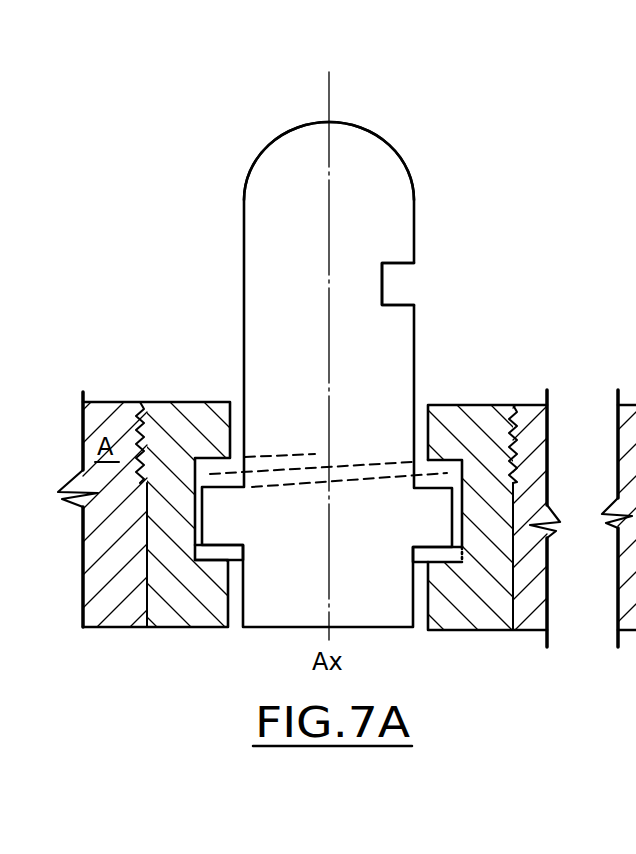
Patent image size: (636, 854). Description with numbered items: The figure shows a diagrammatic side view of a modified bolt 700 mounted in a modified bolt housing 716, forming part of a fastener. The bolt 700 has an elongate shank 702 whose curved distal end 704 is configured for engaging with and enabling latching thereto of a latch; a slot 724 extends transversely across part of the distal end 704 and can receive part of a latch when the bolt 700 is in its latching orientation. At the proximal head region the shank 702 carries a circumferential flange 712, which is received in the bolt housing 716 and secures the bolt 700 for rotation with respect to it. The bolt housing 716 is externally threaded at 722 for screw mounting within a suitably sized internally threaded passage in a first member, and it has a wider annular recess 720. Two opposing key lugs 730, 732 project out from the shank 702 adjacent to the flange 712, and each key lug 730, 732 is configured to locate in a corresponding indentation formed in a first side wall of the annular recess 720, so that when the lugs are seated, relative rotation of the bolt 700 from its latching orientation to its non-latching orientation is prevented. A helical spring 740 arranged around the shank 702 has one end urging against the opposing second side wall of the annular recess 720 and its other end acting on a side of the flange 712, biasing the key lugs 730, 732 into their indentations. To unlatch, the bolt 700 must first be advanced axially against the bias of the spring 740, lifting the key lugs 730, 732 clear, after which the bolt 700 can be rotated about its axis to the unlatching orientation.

The bolt 700 is at (321, 354).
The shank 702 is at (253, 355).
The distal end 704 is at (286, 133).
The flange 712 is at (217, 515).
The bolt housing 716 is at (462, 617).
The annular recess 720 is at (468, 510).
The external thread 722 is at (504, 428).
The slot 724 is at (403, 283).
The key lug 730 is at (222, 553).
The key lug 732 is at (434, 553).
The helical spring 740 is at (361, 456).